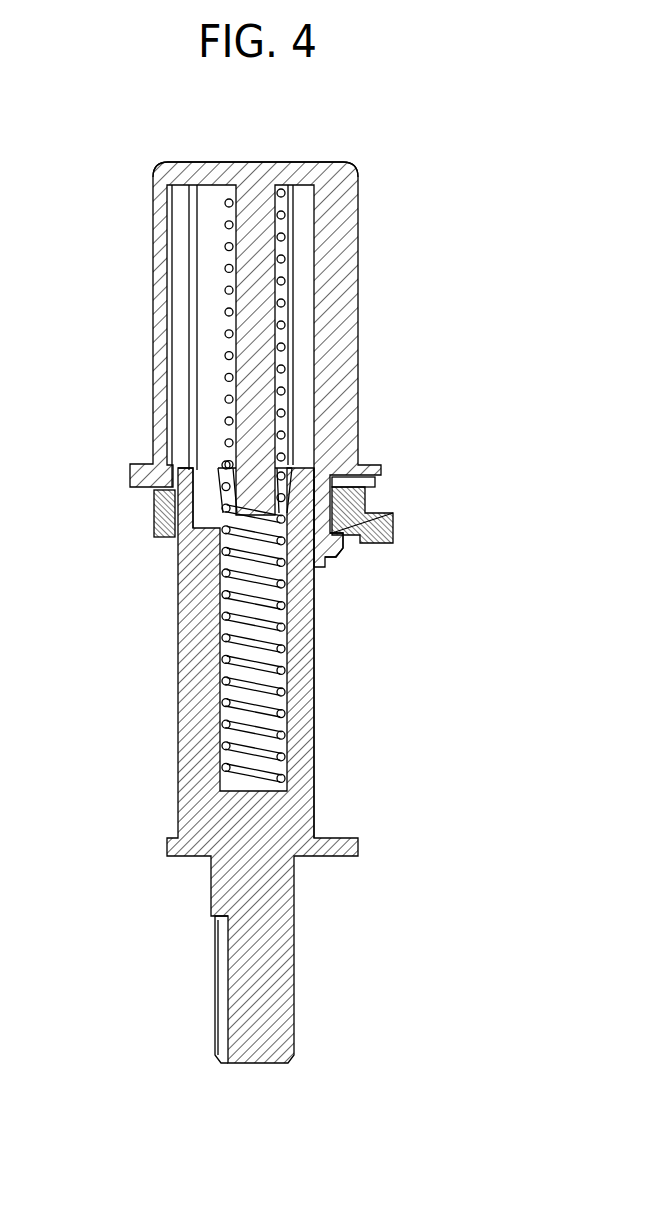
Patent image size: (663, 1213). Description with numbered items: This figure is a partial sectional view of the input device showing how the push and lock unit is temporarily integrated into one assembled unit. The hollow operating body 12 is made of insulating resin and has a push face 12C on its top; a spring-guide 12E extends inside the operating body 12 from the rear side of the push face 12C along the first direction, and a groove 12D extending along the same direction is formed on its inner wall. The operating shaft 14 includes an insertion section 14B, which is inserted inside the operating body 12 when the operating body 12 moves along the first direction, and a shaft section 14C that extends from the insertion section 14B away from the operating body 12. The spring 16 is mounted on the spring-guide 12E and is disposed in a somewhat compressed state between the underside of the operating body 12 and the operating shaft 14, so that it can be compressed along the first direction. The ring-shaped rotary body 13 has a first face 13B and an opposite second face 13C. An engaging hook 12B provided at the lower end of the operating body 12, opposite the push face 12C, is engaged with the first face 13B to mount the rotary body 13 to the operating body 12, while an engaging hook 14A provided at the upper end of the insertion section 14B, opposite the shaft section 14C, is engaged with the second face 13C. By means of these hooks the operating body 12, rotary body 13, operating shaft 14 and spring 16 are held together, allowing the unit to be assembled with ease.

The operating body 12 is at (153, 305).
The engaging hook 12B is at (338, 548).
The push face 12C is at (202, 162).
The groove 12D is at (190, 255).
The spring-guide 12E is at (285, 305).
The rotary body 13 is at (378, 500).
The first face 13B is at (395, 512).
The second face 13C is at (137, 485).
The operating shaft 14 is at (322, 688).
The engaging hook 14A is at (177, 470).
The insertion section 14B is at (315, 657).
The shaft section 14C is at (293, 1005).
The spring 16 is at (227, 598).